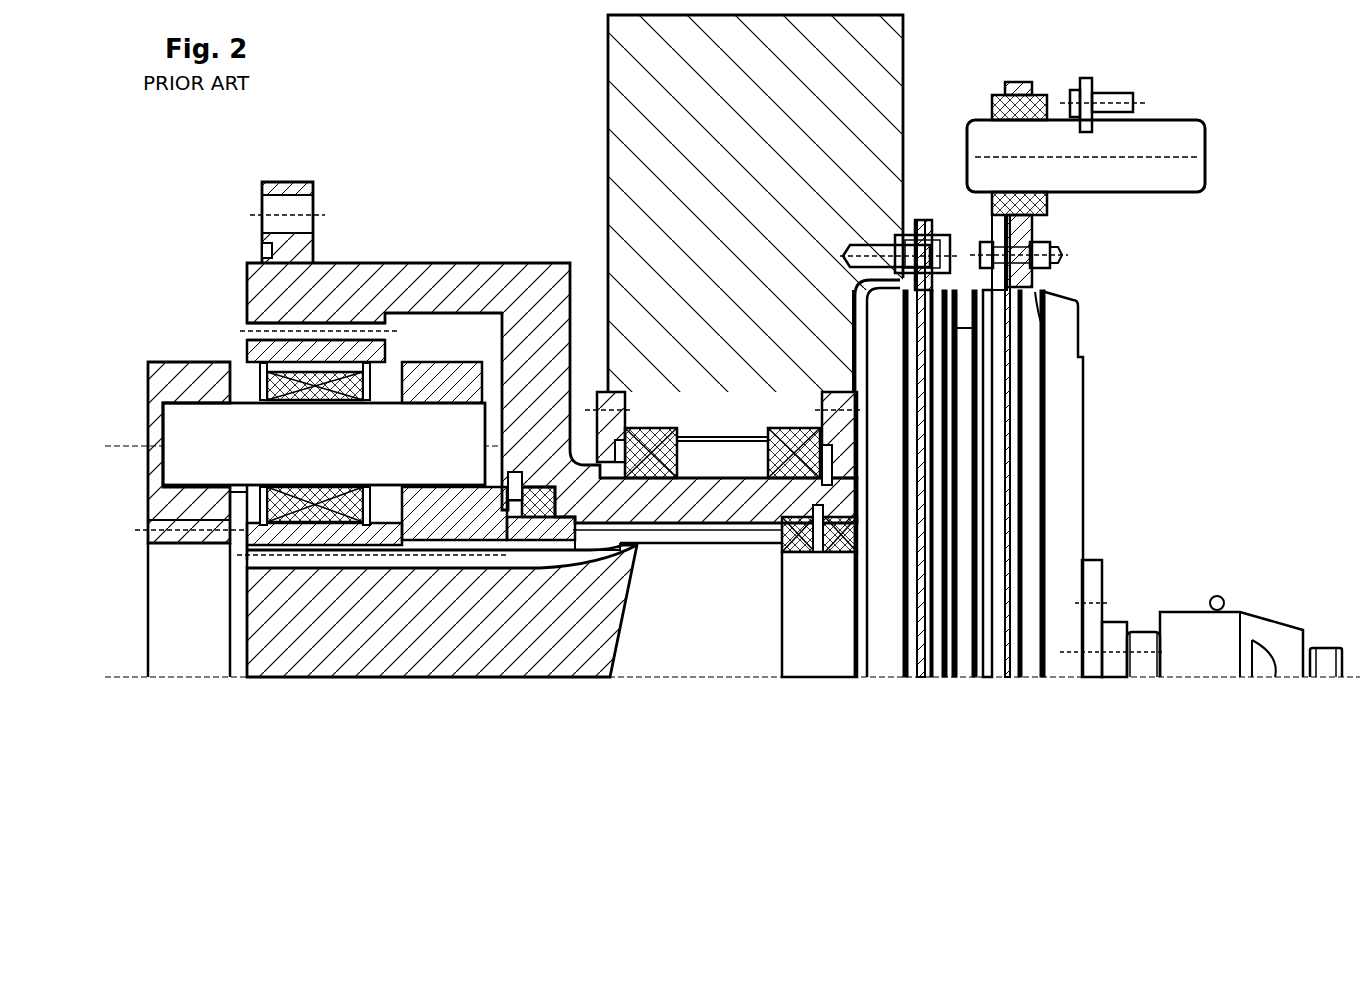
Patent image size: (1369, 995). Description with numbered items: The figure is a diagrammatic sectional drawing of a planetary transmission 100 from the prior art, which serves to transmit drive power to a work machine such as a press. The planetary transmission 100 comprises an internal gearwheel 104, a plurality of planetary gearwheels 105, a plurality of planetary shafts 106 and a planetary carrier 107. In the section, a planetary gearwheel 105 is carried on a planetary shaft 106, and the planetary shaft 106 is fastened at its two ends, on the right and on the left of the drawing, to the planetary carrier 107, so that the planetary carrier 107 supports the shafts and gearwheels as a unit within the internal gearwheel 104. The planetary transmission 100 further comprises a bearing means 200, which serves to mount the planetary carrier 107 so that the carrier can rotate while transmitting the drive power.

The planetary transmission 100 is at (483, 149).
The internal gearwheel 104 is at (245, 330).
The planetary gearwheel 105 is at (247, 347).
The planetary shaft 106 is at (233, 415).
The planetary carrier 107 is at (186, 367).
The bearing means 200 is at (547, 485).